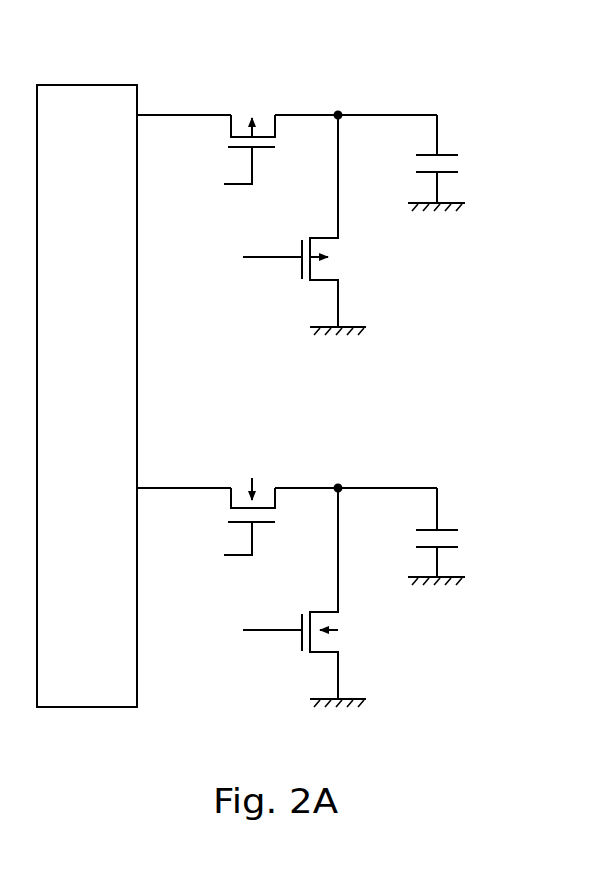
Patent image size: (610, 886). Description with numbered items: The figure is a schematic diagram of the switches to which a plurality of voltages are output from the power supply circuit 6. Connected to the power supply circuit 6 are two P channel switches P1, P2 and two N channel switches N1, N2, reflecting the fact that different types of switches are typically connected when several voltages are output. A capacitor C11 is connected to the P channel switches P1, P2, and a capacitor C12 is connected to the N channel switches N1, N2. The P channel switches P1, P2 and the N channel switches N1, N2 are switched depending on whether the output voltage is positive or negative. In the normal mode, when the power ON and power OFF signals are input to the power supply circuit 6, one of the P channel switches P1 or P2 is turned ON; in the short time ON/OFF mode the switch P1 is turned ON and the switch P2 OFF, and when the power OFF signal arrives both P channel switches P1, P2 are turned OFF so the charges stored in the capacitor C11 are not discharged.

The power supply circuit 6 is at (137, 623).
The P channel switch P1 is at (272, 93).
The P channel switch P2 is at (358, 260).
The N channel switch N1 is at (270, 463).
The N channel switch N2 is at (368, 630).
The capacitor C11 is at (473, 167).
The capacitor C12 is at (475, 540).